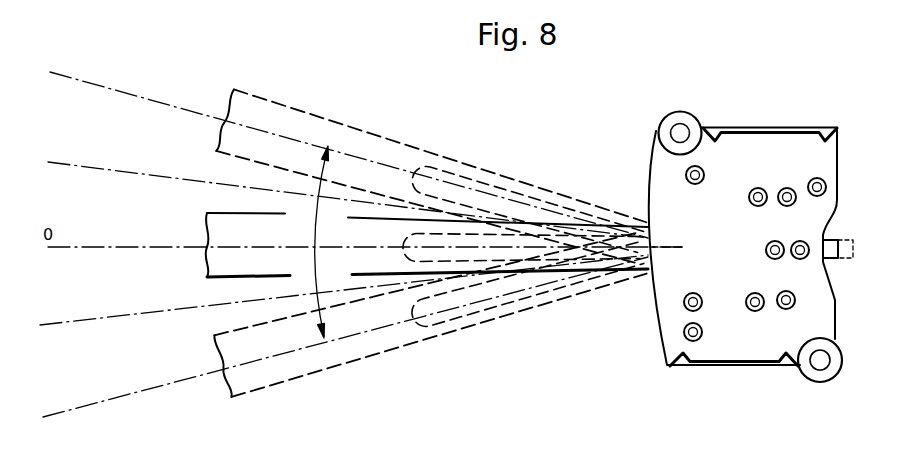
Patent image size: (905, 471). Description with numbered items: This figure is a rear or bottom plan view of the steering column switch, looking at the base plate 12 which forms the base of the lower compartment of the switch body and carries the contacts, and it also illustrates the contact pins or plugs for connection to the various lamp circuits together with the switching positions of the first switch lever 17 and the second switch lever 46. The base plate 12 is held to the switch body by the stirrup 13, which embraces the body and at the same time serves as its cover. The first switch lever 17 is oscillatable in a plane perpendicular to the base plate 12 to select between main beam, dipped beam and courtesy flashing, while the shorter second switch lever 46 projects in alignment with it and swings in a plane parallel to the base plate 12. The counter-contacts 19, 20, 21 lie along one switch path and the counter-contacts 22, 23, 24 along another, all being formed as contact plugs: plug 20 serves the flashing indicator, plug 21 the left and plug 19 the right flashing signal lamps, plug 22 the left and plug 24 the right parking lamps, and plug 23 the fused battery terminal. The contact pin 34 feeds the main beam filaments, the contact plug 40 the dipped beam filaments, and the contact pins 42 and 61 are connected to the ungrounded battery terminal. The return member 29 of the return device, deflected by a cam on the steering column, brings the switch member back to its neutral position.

The base plate 12 is at (648, 188).
The stirrup 13 is at (778, 128).
The first switch lever 17 is at (371, 258).
The counter-contact 19 is at (799, 303).
The counter-contact 20 is at (799, 262).
The counter-contact 21 is at (786, 209).
The counter-contact 22 is at (758, 314).
The counter-contact 23 is at (762, 254).
The counter-contact 24 is at (753, 209).
The return member 29 is at (826, 242).
The contact pin 34 is at (690, 289).
The contact plug 40 is at (707, 337).
The contact pin 42 is at (694, 187).
The second switch lever 46 is at (488, 262).
The contact pin 61 is at (814, 173).